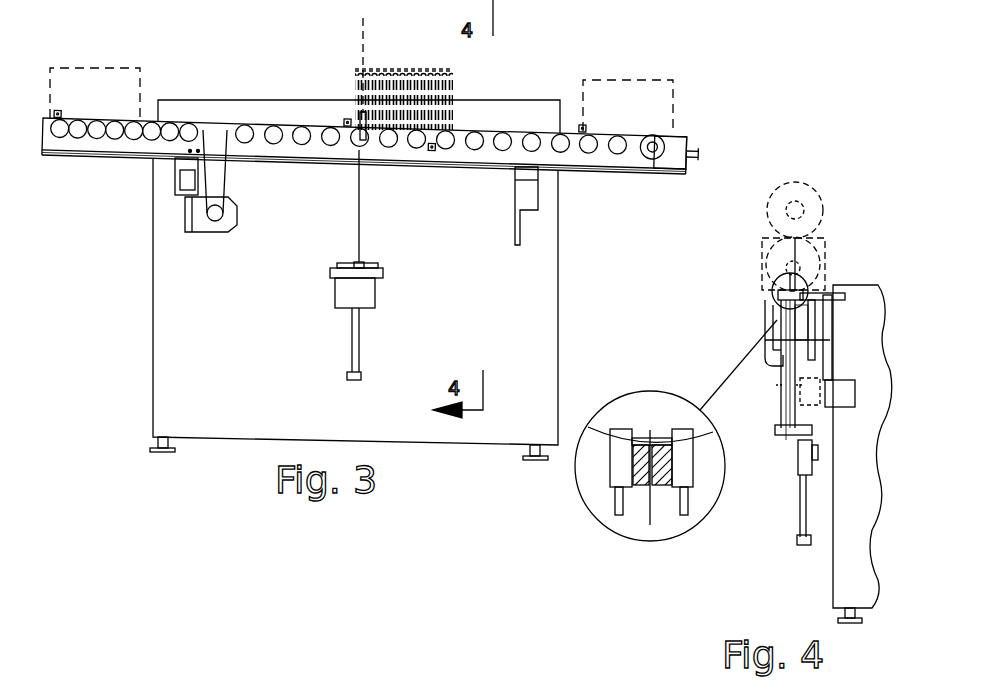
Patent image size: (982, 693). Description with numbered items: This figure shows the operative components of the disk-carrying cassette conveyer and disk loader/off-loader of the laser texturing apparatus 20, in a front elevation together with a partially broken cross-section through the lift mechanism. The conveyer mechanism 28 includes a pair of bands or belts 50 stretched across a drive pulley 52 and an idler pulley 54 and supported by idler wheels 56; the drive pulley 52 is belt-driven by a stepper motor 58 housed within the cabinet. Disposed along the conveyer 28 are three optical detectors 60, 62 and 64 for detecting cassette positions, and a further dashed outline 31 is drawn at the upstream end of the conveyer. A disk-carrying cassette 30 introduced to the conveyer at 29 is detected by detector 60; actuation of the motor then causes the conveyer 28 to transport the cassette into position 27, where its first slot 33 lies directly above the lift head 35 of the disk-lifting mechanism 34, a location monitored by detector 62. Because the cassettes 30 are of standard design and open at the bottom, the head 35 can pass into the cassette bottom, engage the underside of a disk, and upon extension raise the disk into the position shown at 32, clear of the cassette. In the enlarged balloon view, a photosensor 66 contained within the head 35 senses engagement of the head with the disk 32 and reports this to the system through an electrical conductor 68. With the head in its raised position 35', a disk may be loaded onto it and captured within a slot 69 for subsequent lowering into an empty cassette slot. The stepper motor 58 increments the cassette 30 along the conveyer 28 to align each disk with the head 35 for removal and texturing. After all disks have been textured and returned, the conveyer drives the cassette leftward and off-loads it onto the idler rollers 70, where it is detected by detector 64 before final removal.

In FIG. 3, the laser texturing apparatus 20 is at (140, 334).
In FIG. 4, the laser texturing apparatus 20 is at (815, 585).
In FIG. 3, the cassette position 27 is at (455, 90).
In FIG. 3, the conveyer mechanism 28 is at (110, 160).
In FIG. 3, the cassette introduction point 29 is at (610, 80).
In FIG. 4, the cassette 30 is at (762, 250).
In FIG. 3, the loading station 31 is at (96, 67).
In FIG. 3, the disk 32 is at (363, 42).
In FIG. 4, the disk 32 is at (772, 198).
In FIG. 3, the first slot 33 is at (375, 62).
In FIG. 3, the disk-lifting mechanism 34 is at (325, 305).
In FIG. 3, the lift head 35 is at (334, 154).
In FIG. 4, the lift head 35 is at (709, 394).
In FIG. 3, the raised position of lift head 35' is at (336, 83).
In FIG. 4, the raised position of lift head 35' is at (835, 253).
In FIG. 3, the bands or belts 50 is at (490, 160).
In FIG. 3, the drive pulley 52 is at (235, 100).
In FIG. 3, the idler pulley 54 is at (656, 137).
In FIG. 3, the idler wheels 56 is at (432, 150).
In FIG. 3, the stepper motor 58 is at (222, 232).
In FIG. 4, the stepper motor 58 is at (845, 407).
In FIG. 3, the optical detector 60 is at (580, 124).
In FIG. 3, the optical detector 62 is at (345, 121).
In FIG. 4, the optical detector 62 is at (830, 293).
In FIG. 3, the optical detector 64 is at (60, 112).
In FIG. 4, the photosensor 66 is at (650, 444).
In FIG. 4, the electrical conductor 68 is at (787, 448).
In FIG. 4, the slot 69 is at (665, 440).
In FIG. 3, the idler rollers 70 is at (92, 137).